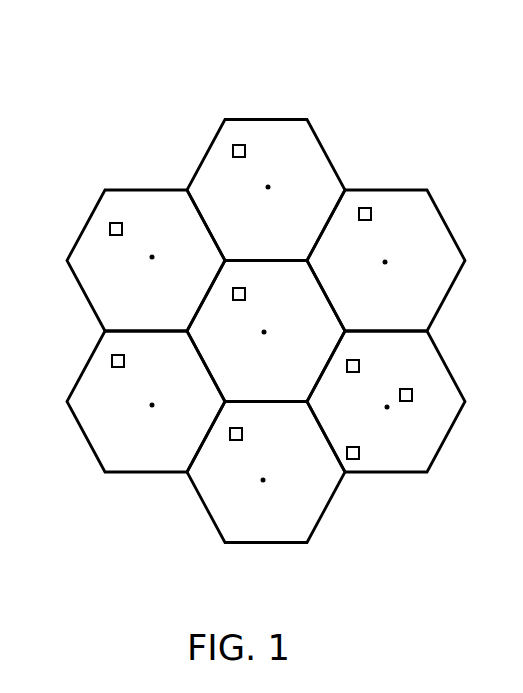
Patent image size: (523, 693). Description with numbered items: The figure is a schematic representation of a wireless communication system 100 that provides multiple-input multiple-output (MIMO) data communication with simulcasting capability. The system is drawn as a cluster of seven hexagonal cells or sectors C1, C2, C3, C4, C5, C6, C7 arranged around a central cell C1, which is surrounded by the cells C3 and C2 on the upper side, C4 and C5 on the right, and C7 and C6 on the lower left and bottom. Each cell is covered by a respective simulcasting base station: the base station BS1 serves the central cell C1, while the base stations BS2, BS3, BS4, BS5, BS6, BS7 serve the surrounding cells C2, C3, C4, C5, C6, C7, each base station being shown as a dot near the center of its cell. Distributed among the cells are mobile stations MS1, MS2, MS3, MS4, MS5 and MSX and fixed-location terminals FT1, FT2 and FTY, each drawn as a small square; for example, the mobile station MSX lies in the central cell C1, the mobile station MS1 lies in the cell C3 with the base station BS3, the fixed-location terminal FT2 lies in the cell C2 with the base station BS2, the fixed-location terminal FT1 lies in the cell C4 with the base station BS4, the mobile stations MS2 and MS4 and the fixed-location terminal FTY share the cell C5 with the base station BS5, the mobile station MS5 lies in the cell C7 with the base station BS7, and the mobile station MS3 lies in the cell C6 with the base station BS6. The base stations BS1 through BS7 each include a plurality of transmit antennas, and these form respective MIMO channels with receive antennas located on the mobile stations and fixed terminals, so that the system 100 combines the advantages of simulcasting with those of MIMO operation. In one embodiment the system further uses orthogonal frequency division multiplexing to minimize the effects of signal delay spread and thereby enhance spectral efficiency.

The wireless communication system 100 is at (318, 95).
The cell C1 is at (326, 340).
The cell C2 is at (90, 240).
The cell C3 is at (218, 157).
The cell C4 is at (430, 243).
The cell C5 is at (433, 369).
The cell C6 is at (316, 494).
The cell C7 is at (90, 383).
The base station BS1 is at (264, 349).
The base station BS2 is at (150, 273).
The base station BS3 is at (268, 201).
The base station BS4 is at (385, 281).
The base station BS5 is at (382, 422).
The base station BS6 is at (258, 495).
The base station BS7 is at (147, 420).
The mobile station MS1 is at (258, 152).
The mobile station MS2 is at (373, 369).
The mobile station MS3 is at (256, 436).
The mobile station MS4 is at (373, 456).
The mobile station MS5 is at (138, 362).
The mobile station MSX is at (260, 296).
The fixed-location terminal FT1 is at (383, 216).
The fixed-location terminal FT2 is at (134, 231).
The fixed-location terminal FTY is at (423, 397).